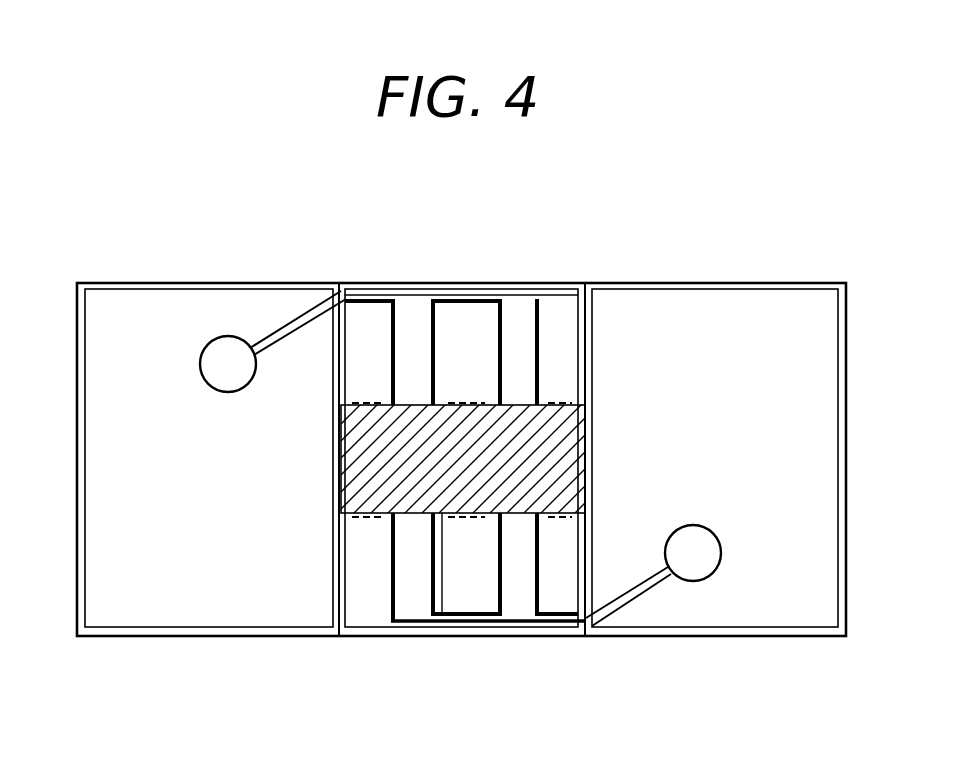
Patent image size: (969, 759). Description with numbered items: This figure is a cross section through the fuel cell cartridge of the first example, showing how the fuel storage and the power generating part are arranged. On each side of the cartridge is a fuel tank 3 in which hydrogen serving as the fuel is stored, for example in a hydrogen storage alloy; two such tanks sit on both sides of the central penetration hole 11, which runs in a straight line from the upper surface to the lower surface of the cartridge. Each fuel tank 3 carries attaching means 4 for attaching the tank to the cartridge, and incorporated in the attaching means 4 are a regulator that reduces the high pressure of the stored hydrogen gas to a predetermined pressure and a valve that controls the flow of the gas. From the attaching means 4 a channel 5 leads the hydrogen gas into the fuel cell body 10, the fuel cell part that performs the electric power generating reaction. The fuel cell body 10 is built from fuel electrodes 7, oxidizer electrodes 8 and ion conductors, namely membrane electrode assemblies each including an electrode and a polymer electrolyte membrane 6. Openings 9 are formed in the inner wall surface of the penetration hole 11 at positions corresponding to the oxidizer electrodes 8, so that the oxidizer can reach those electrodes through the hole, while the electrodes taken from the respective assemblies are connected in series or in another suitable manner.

The fuel tank 3 is at (137, 602).
The attaching means 4 is at (217, 358).
The channel 5 is at (326, 304).
The polymer electrolyte membrane 6 is at (537, 325).
The fuel electrode 7 is at (413, 333).
The oxidizer electrode 8 is at (355, 332).
The opening 9 is at (367, 518).
The fuel cell body 10 is at (580, 358).
The penetration hole 11 is at (448, 495).